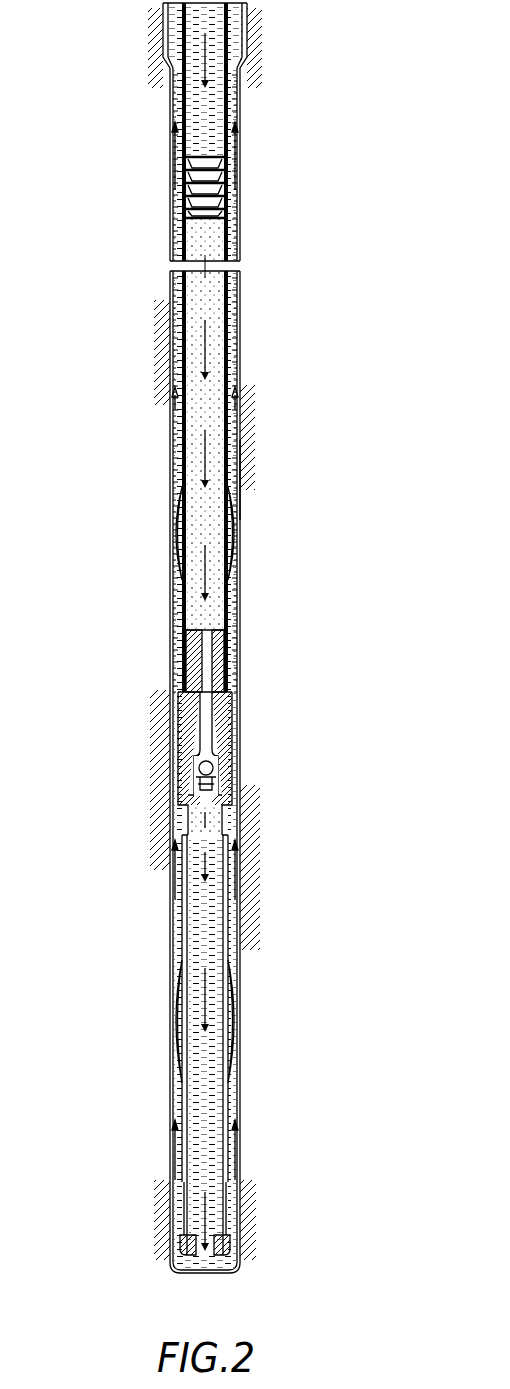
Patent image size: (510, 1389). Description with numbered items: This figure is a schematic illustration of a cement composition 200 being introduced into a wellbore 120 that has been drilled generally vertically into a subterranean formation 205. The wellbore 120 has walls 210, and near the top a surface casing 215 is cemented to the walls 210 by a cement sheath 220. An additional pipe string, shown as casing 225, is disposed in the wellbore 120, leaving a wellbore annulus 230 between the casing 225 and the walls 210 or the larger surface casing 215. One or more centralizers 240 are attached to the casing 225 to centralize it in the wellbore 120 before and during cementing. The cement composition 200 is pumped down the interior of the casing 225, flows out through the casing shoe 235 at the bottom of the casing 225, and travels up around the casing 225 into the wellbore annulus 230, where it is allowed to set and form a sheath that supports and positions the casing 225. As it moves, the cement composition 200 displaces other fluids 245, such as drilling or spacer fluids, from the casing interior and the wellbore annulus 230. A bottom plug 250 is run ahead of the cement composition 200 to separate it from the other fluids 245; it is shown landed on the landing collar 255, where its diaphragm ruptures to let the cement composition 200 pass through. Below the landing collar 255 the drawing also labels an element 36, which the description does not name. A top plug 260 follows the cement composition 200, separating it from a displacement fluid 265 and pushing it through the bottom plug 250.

The surface casing 215 is at (236, 20).
The cement sheath 220 is at (248, 33).
The displacement fluid 265 is at (207, 117).
The top plug 260 is at (186, 206).
The walls 210 is at (233, 218).
The cement composition 200 is at (213, 307).
The other fluids 245 is at (177, 337).
The casing 225 is at (238, 368).
The wellbore annulus 230 is at (178, 455).
The wellbore 120 is at (252, 474).
The centralizers 240 is at (173, 533).
The bottom plug 250 is at (185, 649).
The landing collar 255 is at (180, 720).
The subterranean formation 205 is at (347, 774).
The check valve 36 is at (205, 830).
The casing shoe 235 is at (176, 1200).